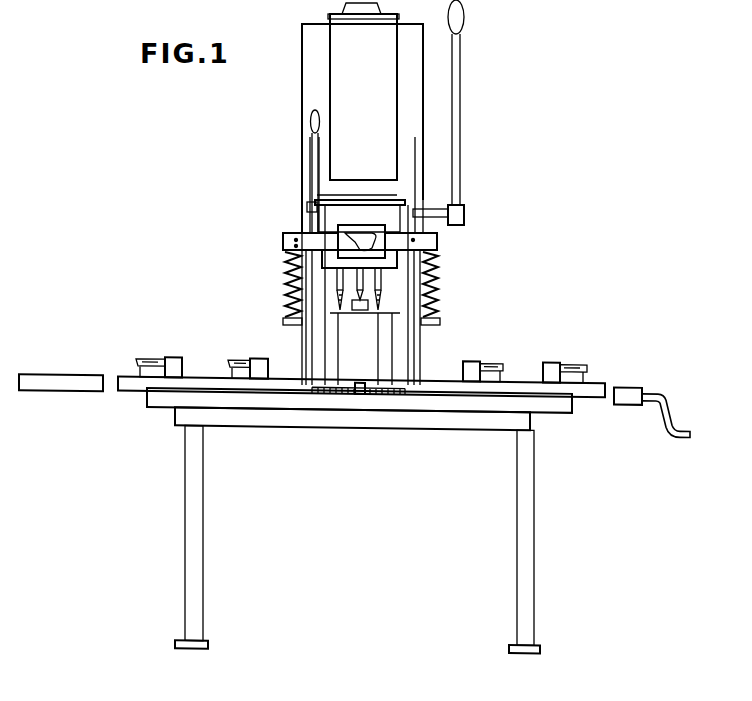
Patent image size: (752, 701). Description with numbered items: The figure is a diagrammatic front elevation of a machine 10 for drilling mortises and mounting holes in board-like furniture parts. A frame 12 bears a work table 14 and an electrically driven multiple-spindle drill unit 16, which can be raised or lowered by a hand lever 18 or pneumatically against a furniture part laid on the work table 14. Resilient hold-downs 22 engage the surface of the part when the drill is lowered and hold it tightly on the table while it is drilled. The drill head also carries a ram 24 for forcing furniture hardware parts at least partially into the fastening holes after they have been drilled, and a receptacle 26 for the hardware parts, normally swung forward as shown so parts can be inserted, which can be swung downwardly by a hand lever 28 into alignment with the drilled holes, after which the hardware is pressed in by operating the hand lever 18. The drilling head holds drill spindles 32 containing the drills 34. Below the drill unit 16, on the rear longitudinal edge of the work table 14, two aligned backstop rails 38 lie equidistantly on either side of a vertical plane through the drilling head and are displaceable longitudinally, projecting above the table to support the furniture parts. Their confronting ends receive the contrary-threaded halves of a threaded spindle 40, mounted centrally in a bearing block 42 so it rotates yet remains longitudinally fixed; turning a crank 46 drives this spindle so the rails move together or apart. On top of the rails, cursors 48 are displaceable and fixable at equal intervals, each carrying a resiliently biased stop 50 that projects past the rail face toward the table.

The machine 10 is at (134, 176).
The frame 12 is at (540, 553).
The work table 14 is at (273, 393).
The multiple-spindle drill unit 16 is at (402, 156).
The hand lever 18 is at (458, 46).
The resilient hold-downs 22 is at (293, 262).
The ram 24 is at (390, 243).
The receptacle 26 is at (355, 237).
The hand lever 28 is at (313, 156).
The drill spindles 32 is at (380, 285).
The drills 34 is at (382, 301).
The backstop rails 38 is at (130, 382).
The threaded spindle 40 is at (393, 395).
The bearing block 42 is at (356, 393).
The crank 46 is at (665, 425).
The cursors 48 is at (148, 360).
The stop 50 is at (180, 357).